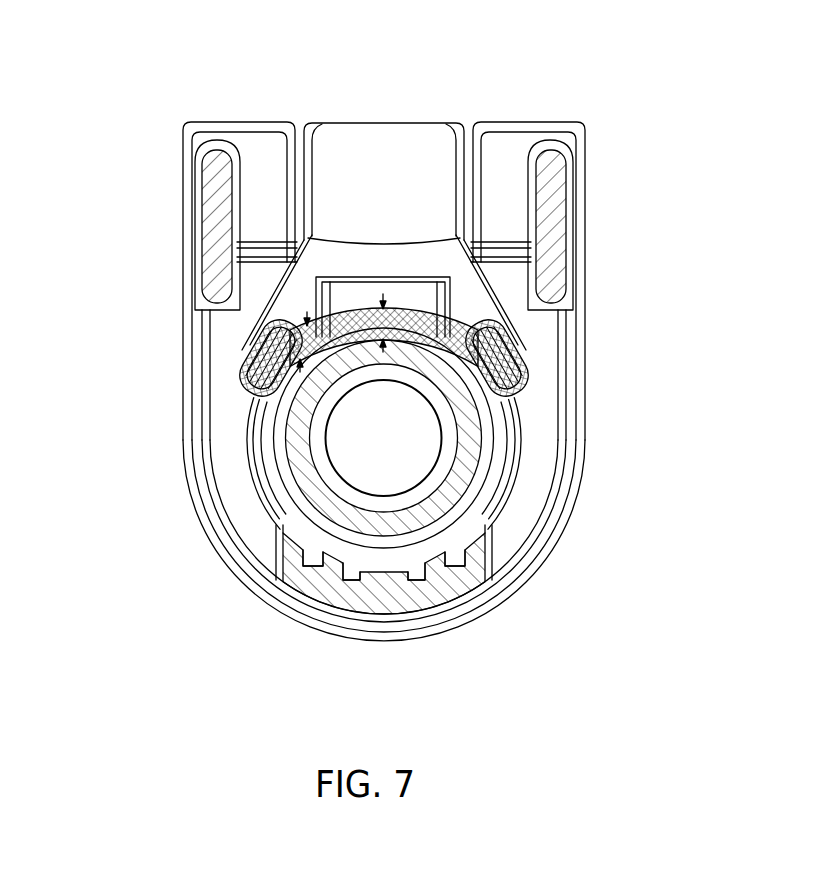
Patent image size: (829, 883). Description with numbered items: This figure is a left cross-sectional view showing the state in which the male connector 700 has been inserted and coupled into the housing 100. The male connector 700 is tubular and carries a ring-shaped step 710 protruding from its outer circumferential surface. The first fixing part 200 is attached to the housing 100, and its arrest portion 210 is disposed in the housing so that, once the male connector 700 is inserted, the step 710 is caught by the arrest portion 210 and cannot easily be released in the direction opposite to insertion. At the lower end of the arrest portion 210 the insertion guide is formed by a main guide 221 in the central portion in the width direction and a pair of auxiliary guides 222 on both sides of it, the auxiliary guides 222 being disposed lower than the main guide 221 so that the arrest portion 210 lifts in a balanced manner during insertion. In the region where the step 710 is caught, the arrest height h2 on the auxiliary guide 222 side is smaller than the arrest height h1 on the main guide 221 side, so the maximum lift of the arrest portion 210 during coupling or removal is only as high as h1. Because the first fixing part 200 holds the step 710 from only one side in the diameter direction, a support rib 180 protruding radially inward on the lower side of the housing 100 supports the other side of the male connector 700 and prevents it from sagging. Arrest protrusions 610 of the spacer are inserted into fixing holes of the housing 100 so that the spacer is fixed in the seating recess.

The housing 100 is at (527, 122).
The first fixing part 200 is at (368, 123).
The arrest portion 210 is at (272, 286).
The main guide 221 is at (362, 307).
The auxiliary guides 222 is at (246, 358).
The arrest protrusions 610 is at (385, 592).
The male connector 700 is at (492, 452).
The step 710 is at (525, 331).
The support rib 180 is at (313, 570).
The arrest height on the main guide side h1 is at (452, 307).
The arrest height on the auxiliary guide side h2 is at (256, 329).